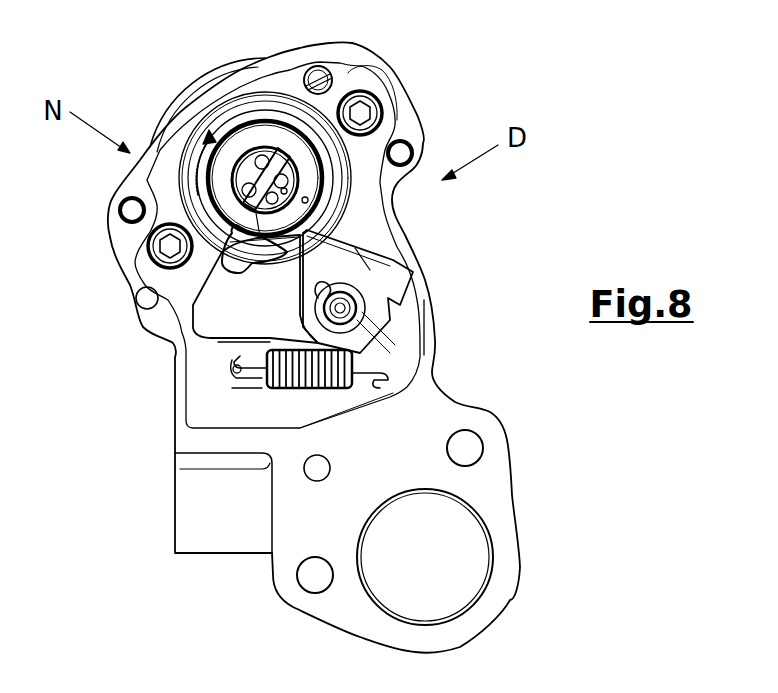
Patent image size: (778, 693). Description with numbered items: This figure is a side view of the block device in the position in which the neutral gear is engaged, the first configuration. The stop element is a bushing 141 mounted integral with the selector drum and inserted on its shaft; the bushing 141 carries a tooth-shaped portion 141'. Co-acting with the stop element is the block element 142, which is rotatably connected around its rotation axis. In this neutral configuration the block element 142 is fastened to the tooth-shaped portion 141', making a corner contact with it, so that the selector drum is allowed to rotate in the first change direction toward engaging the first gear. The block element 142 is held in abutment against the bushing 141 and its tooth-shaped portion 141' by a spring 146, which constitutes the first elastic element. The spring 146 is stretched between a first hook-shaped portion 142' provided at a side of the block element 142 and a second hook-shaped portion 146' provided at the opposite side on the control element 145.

The bushing 141 is at (249, 113).
The tooth-shaped portion 141' is at (370, 251).
The block element 142 is at (185, 308).
The first hook-shaped portion 142' is at (403, 298).
The control element 145 is at (220, 330).
The spring 146 is at (292, 493).
The second hook-shaped portion 146' is at (187, 459).